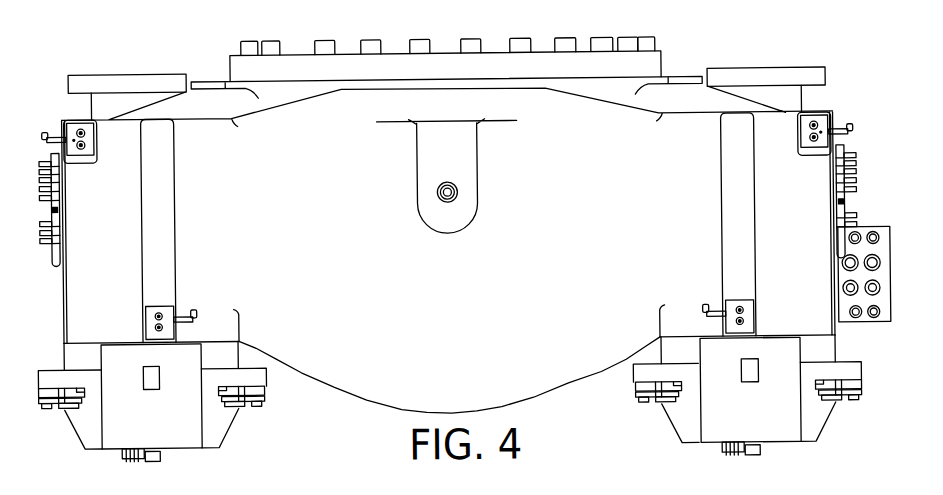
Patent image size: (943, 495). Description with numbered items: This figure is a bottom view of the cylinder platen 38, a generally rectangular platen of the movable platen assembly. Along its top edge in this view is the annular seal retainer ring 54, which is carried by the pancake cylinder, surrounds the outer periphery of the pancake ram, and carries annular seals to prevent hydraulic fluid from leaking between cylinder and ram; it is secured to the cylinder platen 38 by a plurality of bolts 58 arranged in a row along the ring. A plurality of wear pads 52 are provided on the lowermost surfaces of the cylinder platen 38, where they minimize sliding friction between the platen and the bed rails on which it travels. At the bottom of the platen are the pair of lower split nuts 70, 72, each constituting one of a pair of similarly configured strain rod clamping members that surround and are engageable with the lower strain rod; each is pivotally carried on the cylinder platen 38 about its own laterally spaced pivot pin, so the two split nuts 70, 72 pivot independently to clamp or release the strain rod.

The cylinder platen 38 is at (194, 50).
The wear pads 52 is at (84, 127).
The seal retainer ring 54 is at (490, 60).
The bolts 58 is at (327, 43).
The lower split nut 70 is at (217, 418).
The lower split nut 72 is at (88, 421).